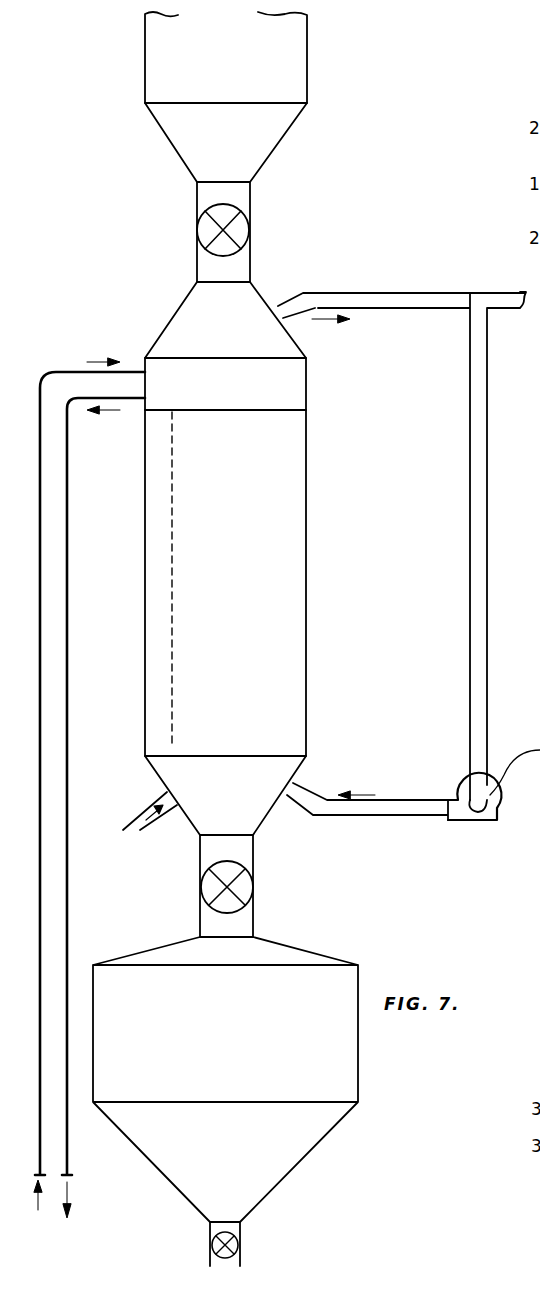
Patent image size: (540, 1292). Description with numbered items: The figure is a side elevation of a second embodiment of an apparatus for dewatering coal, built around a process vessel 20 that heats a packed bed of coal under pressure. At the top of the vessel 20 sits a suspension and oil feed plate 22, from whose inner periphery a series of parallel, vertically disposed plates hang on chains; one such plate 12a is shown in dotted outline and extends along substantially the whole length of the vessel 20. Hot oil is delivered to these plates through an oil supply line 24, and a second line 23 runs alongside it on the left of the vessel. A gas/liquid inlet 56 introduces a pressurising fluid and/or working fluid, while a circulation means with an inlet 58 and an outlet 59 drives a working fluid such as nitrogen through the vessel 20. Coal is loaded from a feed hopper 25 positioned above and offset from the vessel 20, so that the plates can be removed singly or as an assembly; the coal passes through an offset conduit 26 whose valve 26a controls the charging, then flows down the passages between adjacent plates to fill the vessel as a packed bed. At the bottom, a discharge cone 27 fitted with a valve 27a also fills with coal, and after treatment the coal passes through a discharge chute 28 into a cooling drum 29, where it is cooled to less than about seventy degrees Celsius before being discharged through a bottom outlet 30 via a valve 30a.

The feed hopper 25 is at (292, 78).
The offset conduit 26 is at (243, 194).
The valve 26a is at (218, 215).
The suspension and oil feed plate 22 is at (287, 390).
The process vessel 20 is at (311, 606).
The plate 12a is at (175, 585).
The inlet 58 is at (403, 297).
The oil supply line 24 is at (41, 510).
The heating fluid outlet pipe 23 is at (68, 627).
The gas/liquid inlet 56 is at (152, 801).
The outlet 59 is at (392, 808).
The discharge cone 27 is at (200, 822).
The valve 27a is at (242, 847).
The discharge chute 28 is at (208, 888).
The cooling drum 29 is at (297, 988).
The bottom outlet 30 is at (215, 1243).
The valve 30a is at (236, 1224).